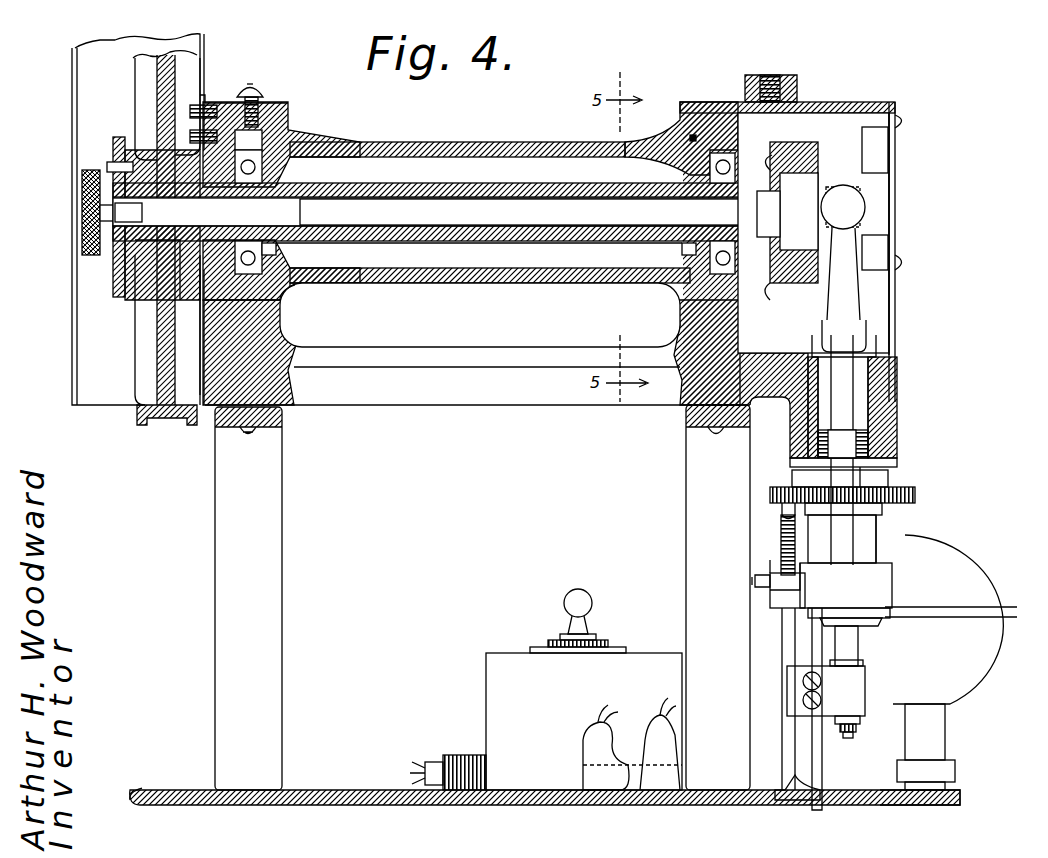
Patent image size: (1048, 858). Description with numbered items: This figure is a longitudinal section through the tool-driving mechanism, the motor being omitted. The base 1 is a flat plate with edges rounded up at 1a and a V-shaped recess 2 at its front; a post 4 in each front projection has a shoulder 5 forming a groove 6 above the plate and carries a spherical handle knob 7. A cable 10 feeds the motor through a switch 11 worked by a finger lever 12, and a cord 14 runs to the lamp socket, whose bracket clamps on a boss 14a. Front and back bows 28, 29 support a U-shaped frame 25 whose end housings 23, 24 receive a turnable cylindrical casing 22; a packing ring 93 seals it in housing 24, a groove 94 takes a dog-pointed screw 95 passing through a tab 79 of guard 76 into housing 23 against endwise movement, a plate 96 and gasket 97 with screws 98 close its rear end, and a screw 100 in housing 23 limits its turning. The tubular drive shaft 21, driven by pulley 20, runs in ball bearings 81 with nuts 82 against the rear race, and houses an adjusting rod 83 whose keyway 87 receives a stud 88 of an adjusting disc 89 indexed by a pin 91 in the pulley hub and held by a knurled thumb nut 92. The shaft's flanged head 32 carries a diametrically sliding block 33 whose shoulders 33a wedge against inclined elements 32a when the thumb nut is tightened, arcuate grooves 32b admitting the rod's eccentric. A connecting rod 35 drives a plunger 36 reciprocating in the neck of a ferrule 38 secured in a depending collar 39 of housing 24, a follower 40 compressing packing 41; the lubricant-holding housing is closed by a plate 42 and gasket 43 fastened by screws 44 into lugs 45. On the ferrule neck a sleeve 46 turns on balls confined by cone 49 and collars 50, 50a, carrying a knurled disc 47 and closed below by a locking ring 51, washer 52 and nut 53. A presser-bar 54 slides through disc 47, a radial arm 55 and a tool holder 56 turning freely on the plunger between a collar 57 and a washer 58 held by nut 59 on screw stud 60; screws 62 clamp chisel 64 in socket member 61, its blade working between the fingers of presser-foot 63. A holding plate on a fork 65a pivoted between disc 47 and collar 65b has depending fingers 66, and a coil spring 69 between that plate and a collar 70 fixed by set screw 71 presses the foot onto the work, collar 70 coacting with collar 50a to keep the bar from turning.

The base 1 is at (316, 790).
The rounded edges 1a is at (138, 790).
The cut-out or recess 2 is at (880, 798).
The post 4 is at (945, 710).
The annular collar or shoulder 5 is at (950, 760).
The groove or space 6 is at (945, 784).
The knob 7 is at (1000, 565).
The cord or cable 10 is at (432, 762).
The switch 11 is at (492, 653).
The finger lever 12 is at (578, 590).
The cord 14 is at (650, 715).
The boss 14a is at (768, 75).
The pulley 20 is at (140, 420).
The drive shaft 21 is at (528, 183).
The cylindrical casing 22 is at (362, 135).
The housing 23 is at (282, 298).
The housing 24 is at (848, 102).
The U-shaped frame 25 is at (474, 414).
The front bow 28 is at (686, 447).
The back bow 29 is at (282, 497).
The flanged head 32 is at (795, 142).
The element of head 32a is at (788, 211).
The arcuate grooves 32b is at (768, 162).
The block 33 is at (835, 190).
The shoulder 33a is at (905, 265).
The connecting rod 35 is at (862, 318).
The plunger 36 is at (822, 340).
The ferrule 38 is at (897, 410).
The downwardly extending collar 39 is at (880, 400).
The follower 40 is at (868, 452).
The packing material 41 is at (818, 455).
The plate 42 is at (895, 210).
The gasket 43 is at (888, 248).
The screws 44 is at (905, 120).
The lugs 45 is at (888, 160).
The sleeve 46 is at (876, 535).
The disc 47 is at (770, 495).
The cone 49 is at (865, 478).
The collar 50 is at (792, 478).
The collar 50a is at (895, 565).
The locking ring 51 is at (846, 585).
The washer 52 is at (880, 608).
The nut 53 is at (870, 625).
The presser-bar 54 is at (782, 620).
The arm 55 is at (770, 598).
The tool holder 56 is at (865, 676).
The collar 57 is at (863, 663).
The washer 58 is at (860, 720).
The nut 59 is at (856, 728).
The screw stud 60 is at (848, 738).
The socket member 61 is at (805, 665).
The securing screws 62 is at (826, 690).
The presser-foot 63 is at (790, 790).
The chisel 64 is at (822, 775).
The fork 65a is at (842, 539).
The collar 65b is at (882, 509).
The depending finger 66 is at (782, 510).
The expansion coil spring 69 is at (781, 540).
The collar 70 is at (770, 573).
The set screw 71 is at (752, 580).
The cover 76 is at (78, 313).
The tabs 79 is at (260, 95).
The ball bearings 81 is at (262, 168).
The nuts 82 is at (262, 130).
The adjusting and securing rod 83 is at (440, 200).
The groove or keyway 87 is at (142, 210).
The stud 88 is at (82, 188).
The adjusting disc 89 is at (120, 296).
The pin 91 is at (108, 165).
The knurled thumb nut 92 is at (100, 214).
The packing ring 93 is at (690, 135).
The circumferential groove 94 is at (290, 280).
The dog pointed screw 95 is at (215, 108).
The plate 96 is at (185, 260).
The gasket 97 is at (282, 318).
The screws 98 is at (190, 136).
The screw 100 is at (205, 98).